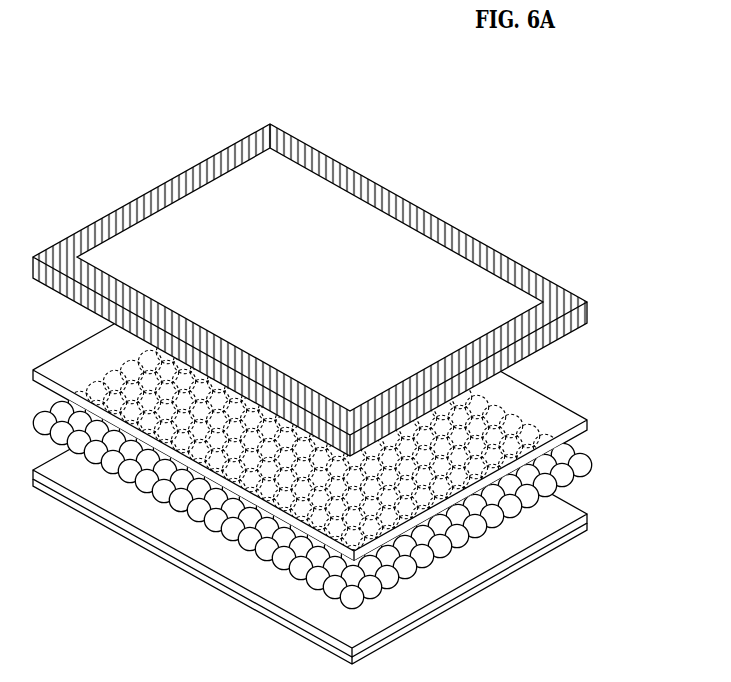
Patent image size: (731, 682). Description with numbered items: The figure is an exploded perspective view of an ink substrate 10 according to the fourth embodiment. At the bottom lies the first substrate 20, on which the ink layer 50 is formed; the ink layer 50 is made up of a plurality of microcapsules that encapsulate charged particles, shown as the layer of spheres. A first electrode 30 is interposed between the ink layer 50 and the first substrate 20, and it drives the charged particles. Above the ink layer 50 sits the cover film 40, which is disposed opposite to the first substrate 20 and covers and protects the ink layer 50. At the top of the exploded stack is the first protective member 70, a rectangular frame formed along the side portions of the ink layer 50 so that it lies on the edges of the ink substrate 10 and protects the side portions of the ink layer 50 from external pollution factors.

The ink substrate 10 is at (95, 100).
The first substrate 20 is at (571, 543).
The first electrode 30 is at (566, 512).
The cover film 40 is at (587, 438).
The ink layer 50 is at (607, 462).
The first protective member 70 is at (372, 190).